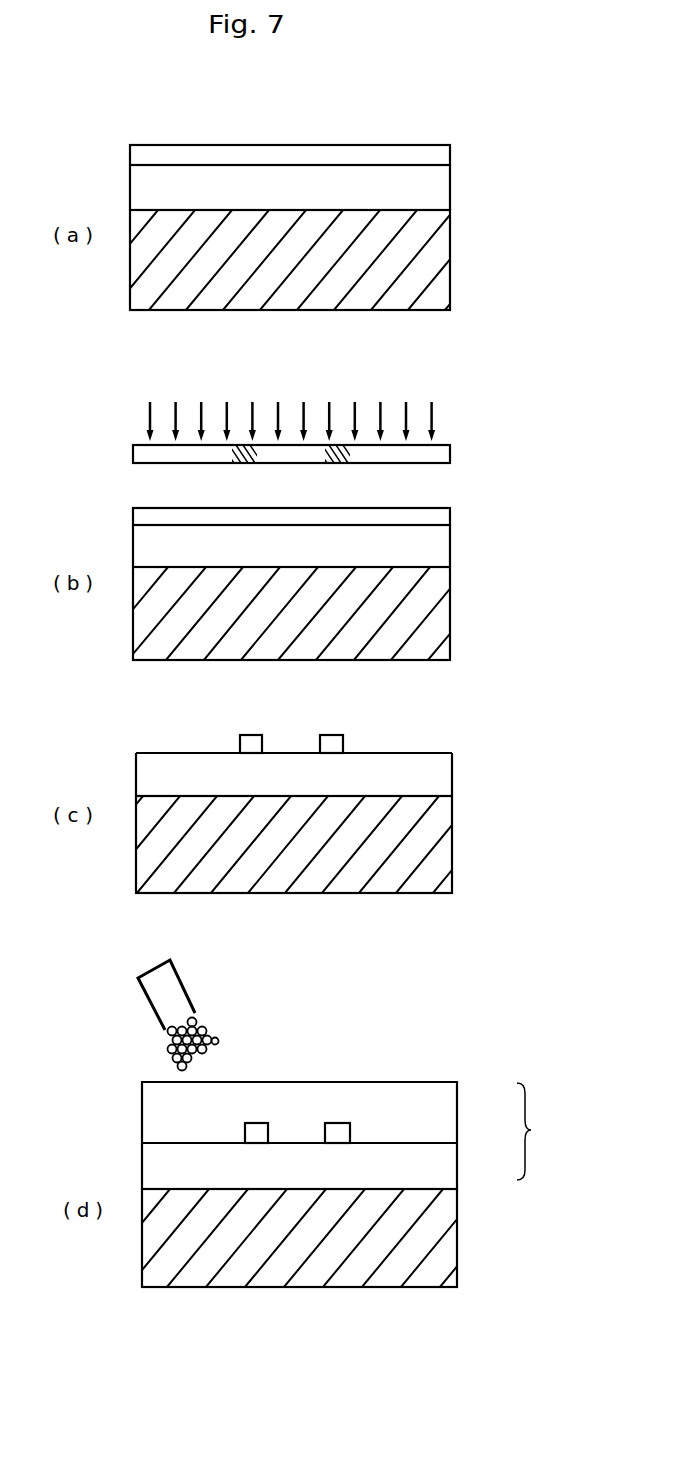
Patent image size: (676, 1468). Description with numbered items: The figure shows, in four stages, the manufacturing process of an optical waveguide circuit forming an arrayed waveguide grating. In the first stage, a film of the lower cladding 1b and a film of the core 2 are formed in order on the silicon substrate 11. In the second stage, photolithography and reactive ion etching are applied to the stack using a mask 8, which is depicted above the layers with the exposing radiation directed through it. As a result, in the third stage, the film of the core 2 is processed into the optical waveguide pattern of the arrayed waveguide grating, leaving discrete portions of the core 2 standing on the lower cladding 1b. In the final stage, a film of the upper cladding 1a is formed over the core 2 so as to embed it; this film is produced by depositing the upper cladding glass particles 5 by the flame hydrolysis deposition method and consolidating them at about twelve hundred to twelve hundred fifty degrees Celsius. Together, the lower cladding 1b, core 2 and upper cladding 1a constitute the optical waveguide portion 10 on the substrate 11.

The core 2 is at (442, 153).
The lower cladding 1b is at (442, 190).
The upper cladding 1a is at (450, 1090).
The optical waveguide portion 10 is at (540, 1131).
The substrate 11 is at (442, 255).
The mask 8 is at (447, 454).
The upper cladding glass particles 5 is at (219, 1042).